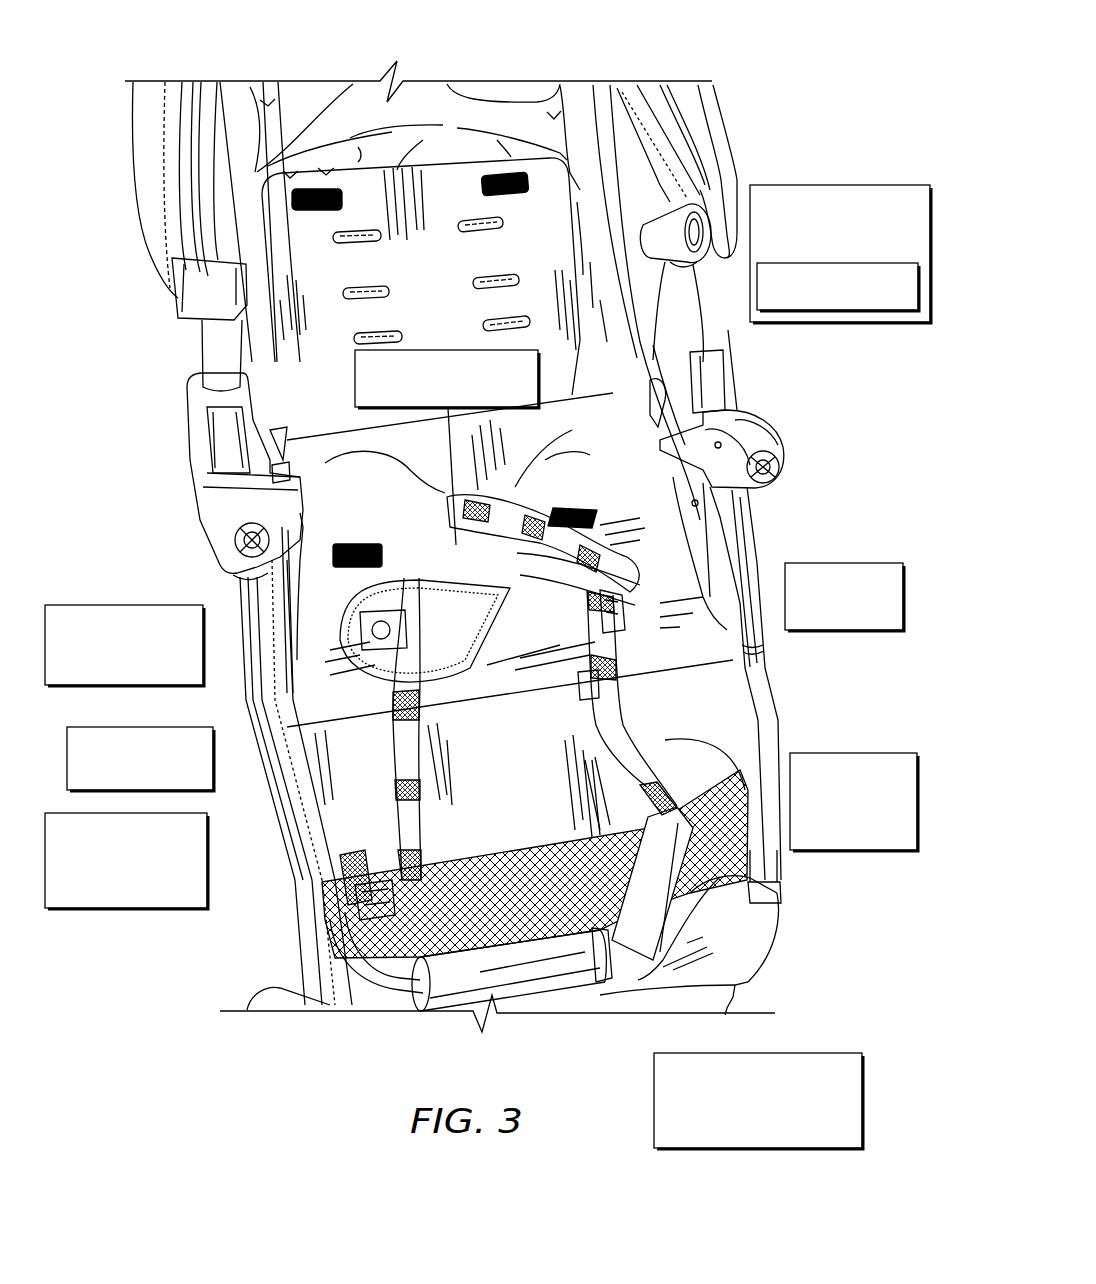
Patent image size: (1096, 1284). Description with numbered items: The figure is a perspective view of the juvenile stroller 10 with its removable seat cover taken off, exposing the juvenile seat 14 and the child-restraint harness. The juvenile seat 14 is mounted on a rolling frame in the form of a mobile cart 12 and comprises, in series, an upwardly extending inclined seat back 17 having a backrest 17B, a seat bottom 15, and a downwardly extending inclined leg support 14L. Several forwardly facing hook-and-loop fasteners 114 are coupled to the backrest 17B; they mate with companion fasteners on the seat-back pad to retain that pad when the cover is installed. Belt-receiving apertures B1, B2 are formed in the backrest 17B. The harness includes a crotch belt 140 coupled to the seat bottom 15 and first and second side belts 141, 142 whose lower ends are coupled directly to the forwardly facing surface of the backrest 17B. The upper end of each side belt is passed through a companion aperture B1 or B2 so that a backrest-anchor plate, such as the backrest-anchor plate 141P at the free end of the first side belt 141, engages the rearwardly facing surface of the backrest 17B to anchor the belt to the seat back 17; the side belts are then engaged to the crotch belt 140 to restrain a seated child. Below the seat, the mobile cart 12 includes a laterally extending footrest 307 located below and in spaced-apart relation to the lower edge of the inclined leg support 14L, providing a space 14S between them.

The juvenile stroller 10 is at (489, 577).
The mobile cart 12 is at (710, 672).
The juvenile seat 14 is at (220, 533).
The seat bottom 15 is at (395, 657).
The inclined leg support 14L is at (396, 785).
The space 14S is at (242, 921).
The seat back 17 is at (596, 336).
The backrest 17B is at (626, 287).
The hook-and-loop fasteners 114 is at (442, 369).
The belt-receiving aperture B1 is at (384, 273).
The belt-receiving aperture B2 is at (477, 266).
The crotch belt 140 is at (622, 588).
The first side belt 141 is at (244, 729).
The second side belt 142 is at (750, 720).
The backrest-anchor plate 141P is at (746, 1038).
The footrest 307 is at (776, 907).